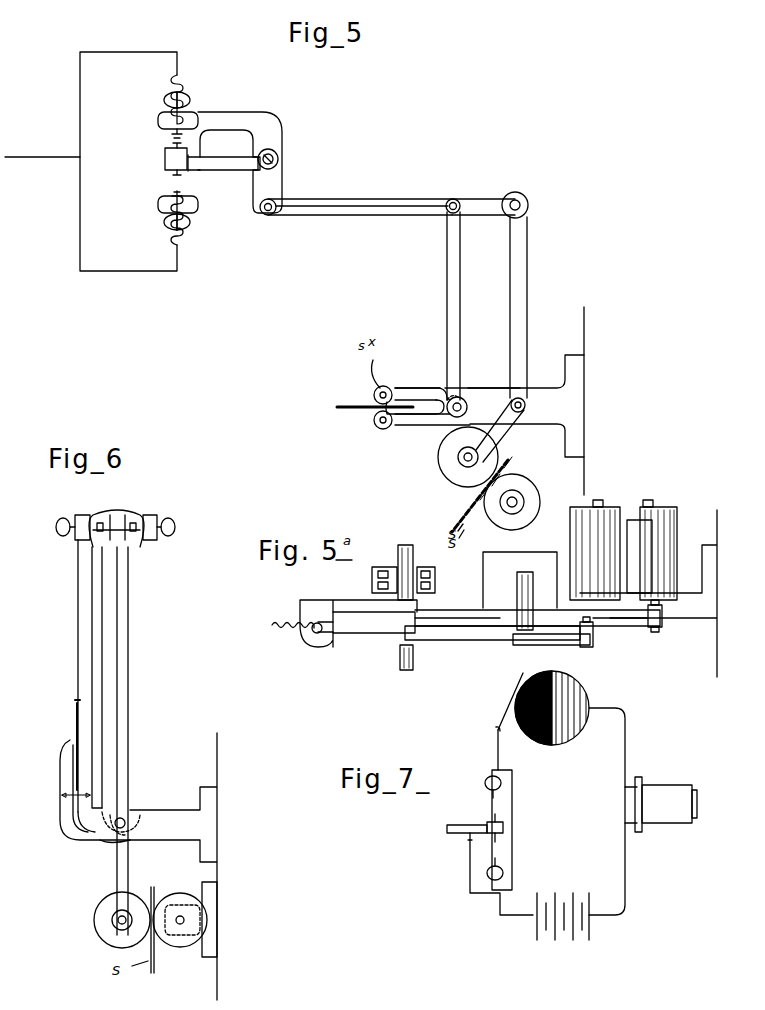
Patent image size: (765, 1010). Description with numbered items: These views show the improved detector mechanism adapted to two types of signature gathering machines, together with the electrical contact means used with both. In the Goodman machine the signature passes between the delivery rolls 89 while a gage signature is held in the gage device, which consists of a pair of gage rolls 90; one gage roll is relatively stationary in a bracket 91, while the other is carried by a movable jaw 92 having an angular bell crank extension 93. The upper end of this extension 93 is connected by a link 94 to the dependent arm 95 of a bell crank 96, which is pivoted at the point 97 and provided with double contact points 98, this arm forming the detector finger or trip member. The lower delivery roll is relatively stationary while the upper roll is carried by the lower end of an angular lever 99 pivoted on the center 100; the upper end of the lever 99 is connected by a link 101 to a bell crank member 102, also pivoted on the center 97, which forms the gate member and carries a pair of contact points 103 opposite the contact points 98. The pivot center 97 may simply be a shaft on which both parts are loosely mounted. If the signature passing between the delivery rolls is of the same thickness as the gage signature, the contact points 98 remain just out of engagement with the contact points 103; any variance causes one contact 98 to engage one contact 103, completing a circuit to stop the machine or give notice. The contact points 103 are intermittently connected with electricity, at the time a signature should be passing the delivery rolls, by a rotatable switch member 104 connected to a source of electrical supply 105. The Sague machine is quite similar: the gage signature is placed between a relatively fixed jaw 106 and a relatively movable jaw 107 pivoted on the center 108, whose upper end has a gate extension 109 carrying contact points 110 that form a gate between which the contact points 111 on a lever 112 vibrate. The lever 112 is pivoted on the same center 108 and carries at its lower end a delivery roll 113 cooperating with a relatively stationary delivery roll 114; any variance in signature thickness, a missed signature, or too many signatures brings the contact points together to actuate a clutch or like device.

In FIG. 5, the delivery rolls 89 is at (496, 462).
In FIG. 5A, the delivery rolls 89 is at (674, 530).
In FIG. 5, the gage rolls 90 is at (373, 420).
In FIG. 5A, the gage rolls 90 is at (526, 572).
In FIG. 5, the bracket 91 is at (414, 426).
In FIG. 5A, the bracket 91 is at (700, 612).
In FIG. 5, the movable jaw 92 is at (420, 386).
In FIG. 5A, the movable jaw 92 is at (548, 640).
In FIG. 5, the angular bell crank extension 93 is at (446, 270).
In FIG. 5A, the angular bell crank extension 93 is at (593, 632).
In FIG. 5, the link 94 is at (366, 198).
In FIG. 5A, the link 94 is at (468, 641).
In FIG. 5, the dependent arm 95 is at (262, 197).
In FIG. 5A, the dependent arm 95 is at (403, 645).
In FIG. 5, the bell crank 96 is at (238, 172).
In FIG. 5A, the bell crank 96 is at (367, 634).
In FIG. 7, the bell crank 96 is at (459, 841).
In FIG. 5, the pivot point 97 is at (280, 158).
In FIG. 5A, the pivot point 97 is at (408, 547).
In FIG. 5, the contact points 98 is at (168, 172).
In FIG. 7, the contact points 98 is at (497, 820).
In FIG. 5, the angular lever 99 is at (528, 297).
In FIG. 5A, the angular lever 99 is at (658, 630).
In FIG. 5, the pivot center 100 is at (526, 405).
In FIG. 5, the link 101 is at (467, 200).
In FIG. 5A, the link 101 is at (537, 610).
In FIG. 5, the bell crank member 102 is at (243, 117).
In FIG. 5A, the bell crank member 102 is at (335, 602).
In FIG. 5, the contact points 103 is at (168, 131).
In FIG. 7, the contact points 103 is at (500, 793).
In FIG. 7, the rotatable switch member 104 is at (580, 686).
In FIG. 7, the source of electrical supply 105 is at (566, 895).
In FIG. 6, the relatively fixed jaw 106 is at (66, 740).
In FIG. 6, the relatively movable jaw 107 is at (80, 668).
In FIG. 6, the pivot center 108 is at (126, 815).
In FIG. 6, the gate extension 109 is at (118, 512).
In FIG. 6, the contact points 110 is at (97, 540).
In FIG. 6, the contact points 111 is at (130, 520).
In FIG. 6, the lever 112 is at (130, 652).
In FIG. 6, the delivery roll 113 is at (100, 935).
In FIG. 6, the relatively stationary delivery roll 114 is at (182, 948).